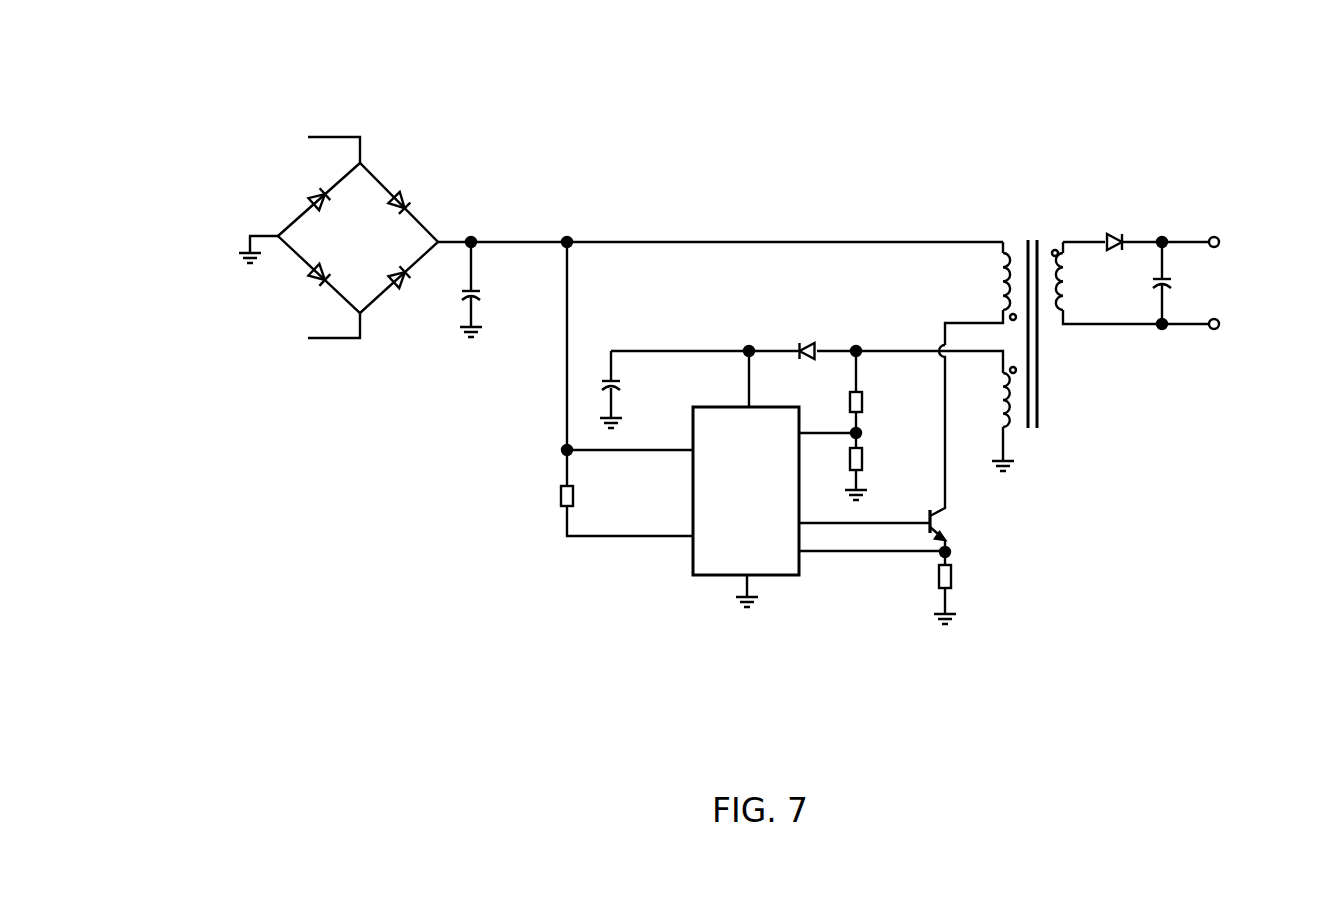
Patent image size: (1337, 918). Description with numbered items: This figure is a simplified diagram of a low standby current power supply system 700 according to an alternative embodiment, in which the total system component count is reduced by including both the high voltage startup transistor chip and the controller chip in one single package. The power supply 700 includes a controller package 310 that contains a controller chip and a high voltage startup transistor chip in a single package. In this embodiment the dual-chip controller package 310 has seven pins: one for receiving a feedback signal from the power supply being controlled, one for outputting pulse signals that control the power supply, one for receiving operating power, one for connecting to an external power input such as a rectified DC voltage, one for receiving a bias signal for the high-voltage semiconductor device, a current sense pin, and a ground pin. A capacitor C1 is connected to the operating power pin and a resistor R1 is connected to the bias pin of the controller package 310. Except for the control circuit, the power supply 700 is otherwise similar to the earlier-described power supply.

The low standby current power supply system 700 is at (754, 326).
The controller package 310 is at (700, 582).
The capacitor C1 is at (623, 390).
The resistor R1 is at (558, 493).